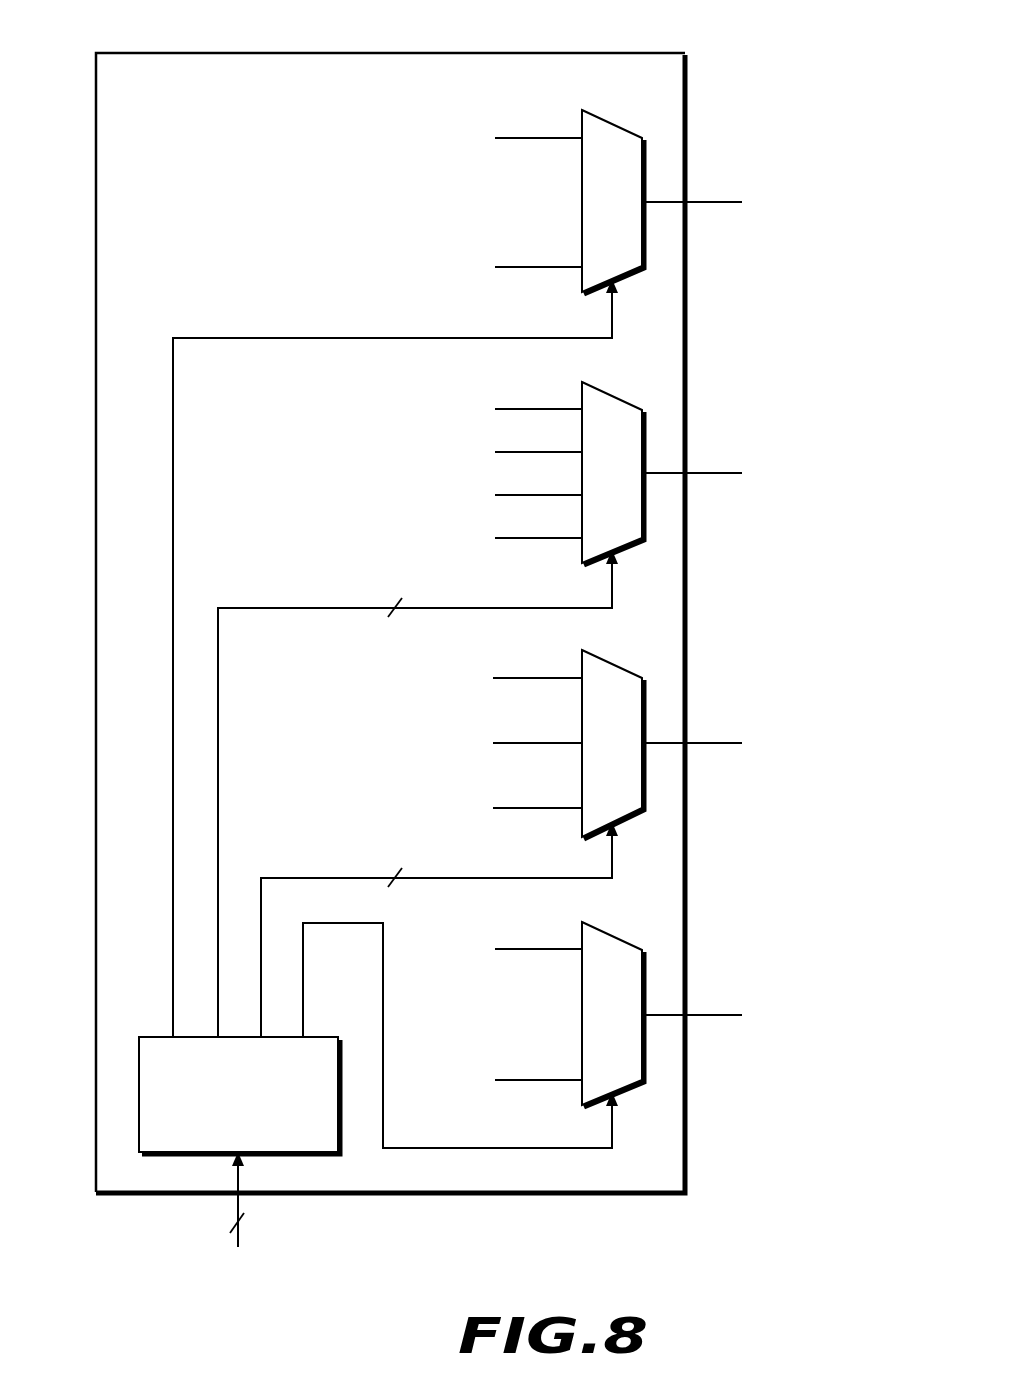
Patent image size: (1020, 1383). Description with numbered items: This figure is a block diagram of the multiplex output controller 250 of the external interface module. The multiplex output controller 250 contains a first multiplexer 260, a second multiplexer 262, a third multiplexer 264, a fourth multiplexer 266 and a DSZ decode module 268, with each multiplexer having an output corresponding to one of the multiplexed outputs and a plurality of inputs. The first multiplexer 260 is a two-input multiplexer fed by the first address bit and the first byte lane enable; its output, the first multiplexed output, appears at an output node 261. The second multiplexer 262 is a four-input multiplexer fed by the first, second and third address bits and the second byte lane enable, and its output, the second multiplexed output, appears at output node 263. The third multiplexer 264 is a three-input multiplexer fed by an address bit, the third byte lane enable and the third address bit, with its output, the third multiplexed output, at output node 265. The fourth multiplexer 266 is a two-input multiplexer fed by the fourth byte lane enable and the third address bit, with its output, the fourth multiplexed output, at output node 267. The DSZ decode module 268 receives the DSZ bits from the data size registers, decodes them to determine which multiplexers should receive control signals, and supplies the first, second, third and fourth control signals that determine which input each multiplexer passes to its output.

The multiplex output controller 250 is at (590, 33).
The first multiplexer 260 is at (604, 117).
The output node 261 is at (712, 199).
The second multiplexer 262 is at (604, 389).
The output node 263 is at (711, 470).
The third multiplexer 264 is at (604, 657).
The output node 265 is at (711, 740).
The fourth multiplexer 266 is at (604, 929).
The output node 267 is at (711, 1012).
The DSZ decode module 268 is at (156, 1035).